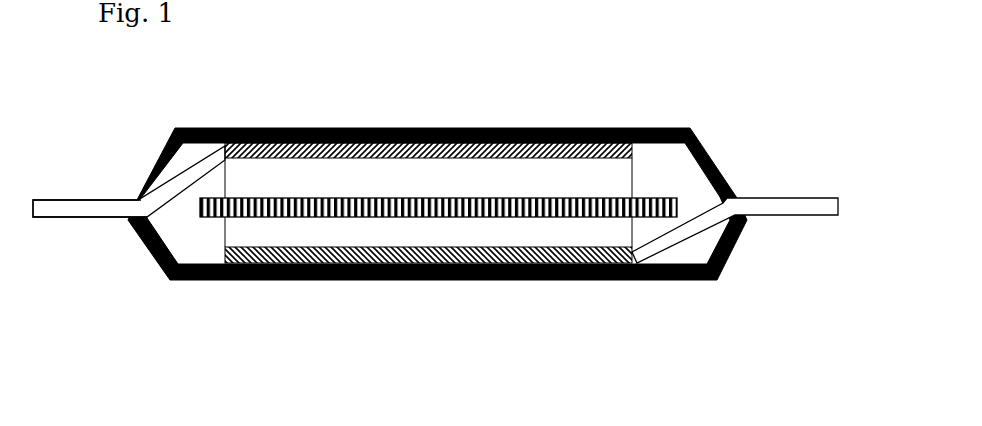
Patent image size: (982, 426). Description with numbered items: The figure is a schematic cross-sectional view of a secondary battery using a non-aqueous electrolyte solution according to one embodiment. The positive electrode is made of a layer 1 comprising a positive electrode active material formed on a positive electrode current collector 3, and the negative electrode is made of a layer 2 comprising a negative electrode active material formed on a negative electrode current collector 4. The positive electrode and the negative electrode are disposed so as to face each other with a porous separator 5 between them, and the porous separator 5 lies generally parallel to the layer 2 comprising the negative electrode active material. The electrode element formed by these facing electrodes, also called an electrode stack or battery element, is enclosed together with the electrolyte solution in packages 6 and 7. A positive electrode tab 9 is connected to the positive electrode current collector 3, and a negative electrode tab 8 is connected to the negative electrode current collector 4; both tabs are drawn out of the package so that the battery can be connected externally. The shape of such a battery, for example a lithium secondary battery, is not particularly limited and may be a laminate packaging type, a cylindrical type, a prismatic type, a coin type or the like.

The layer comprising a positive electrode active material 1 is at (389, 237).
The layer comprising a negative electrode active material 2 is at (398, 175).
The positive electrode current collector 3 is at (353, 280).
The negative electrode current collector 4 is at (327, 128).
The porous separator 5 is at (491, 217).
The package 6 is at (308, 280).
The package 7 is at (210, 128).
The negative electrode tab 8 is at (90, 218).
The positive electrode tab 9 is at (675, 245).